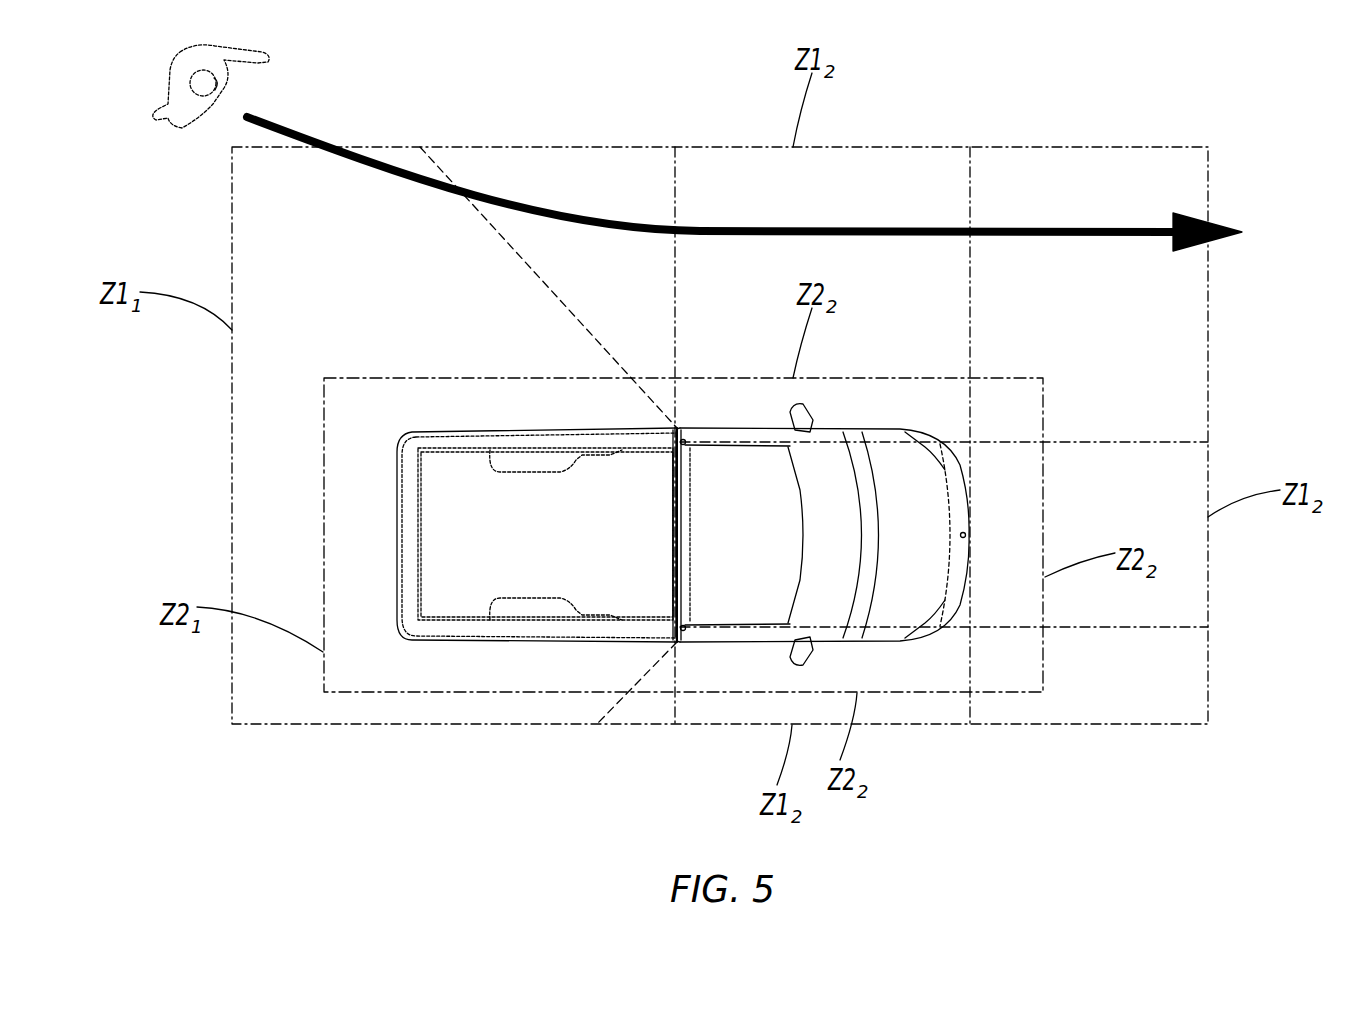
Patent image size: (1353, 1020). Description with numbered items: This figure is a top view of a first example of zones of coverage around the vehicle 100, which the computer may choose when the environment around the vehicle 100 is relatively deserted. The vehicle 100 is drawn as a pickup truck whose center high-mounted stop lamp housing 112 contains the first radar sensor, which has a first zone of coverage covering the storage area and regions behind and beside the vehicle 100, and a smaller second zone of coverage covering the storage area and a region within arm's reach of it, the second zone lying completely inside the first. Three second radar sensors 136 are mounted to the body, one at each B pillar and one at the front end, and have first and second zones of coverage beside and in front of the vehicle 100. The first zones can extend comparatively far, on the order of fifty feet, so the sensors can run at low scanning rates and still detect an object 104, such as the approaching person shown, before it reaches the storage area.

The vehicle 100 is at (882, 652).
The object 104 is at (178, 80).
The center high-mounted stop lamp housing 112 is at (678, 535).
The second radar sensors 136 is at (686, 448).